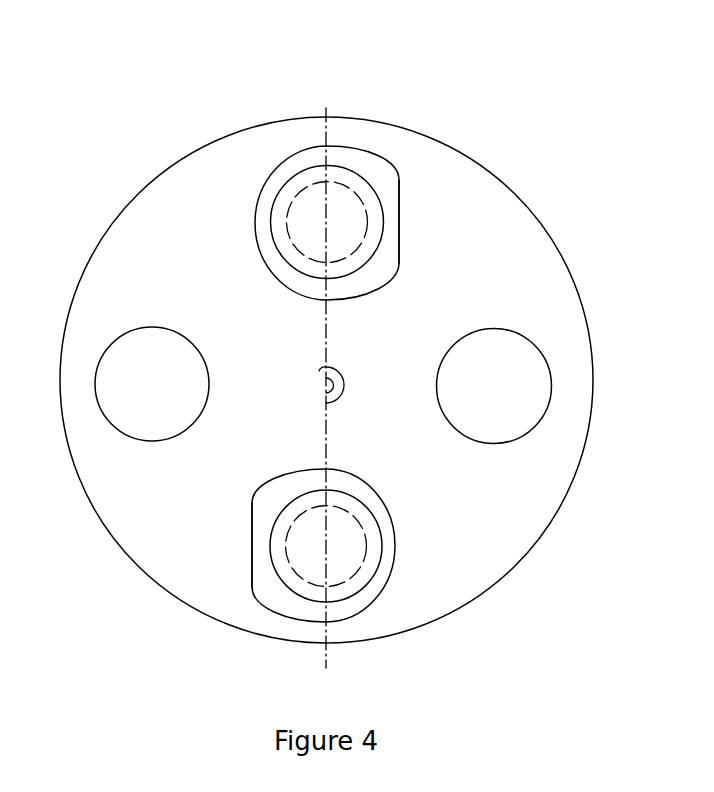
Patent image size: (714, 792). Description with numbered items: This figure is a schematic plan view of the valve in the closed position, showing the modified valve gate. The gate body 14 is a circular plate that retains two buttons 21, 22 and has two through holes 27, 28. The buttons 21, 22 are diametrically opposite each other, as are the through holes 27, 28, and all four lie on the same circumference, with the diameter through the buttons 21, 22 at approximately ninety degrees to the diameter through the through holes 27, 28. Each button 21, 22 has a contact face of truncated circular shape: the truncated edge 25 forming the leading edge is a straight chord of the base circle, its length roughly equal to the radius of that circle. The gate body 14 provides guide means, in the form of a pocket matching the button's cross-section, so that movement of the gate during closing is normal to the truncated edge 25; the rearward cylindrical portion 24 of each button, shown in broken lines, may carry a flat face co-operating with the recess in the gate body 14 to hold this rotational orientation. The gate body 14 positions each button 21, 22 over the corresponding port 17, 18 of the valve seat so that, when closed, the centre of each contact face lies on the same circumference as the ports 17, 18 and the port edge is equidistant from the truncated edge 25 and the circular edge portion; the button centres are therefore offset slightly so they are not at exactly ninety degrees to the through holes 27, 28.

The gate body 14 is at (510, 187).
The port 17 is at (399, 198).
The port 18 is at (381, 538).
The button 21 is at (377, 156).
The button 22 is at (372, 490).
The rearward cylindrical portion 24 is at (290, 205).
The truncated edge 25 is at (399, 252).
The through hole 27 is at (494, 386).
The through hole 28 is at (152, 384).